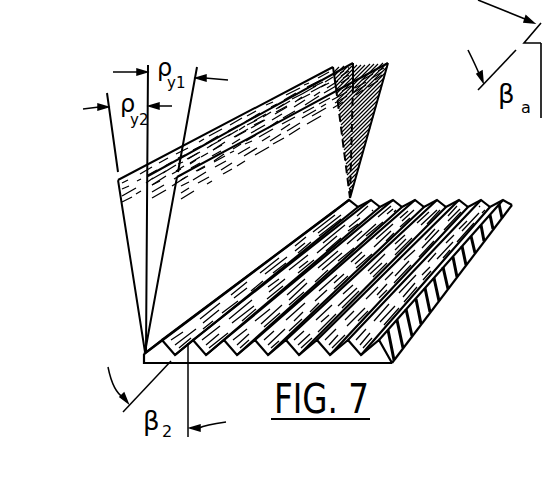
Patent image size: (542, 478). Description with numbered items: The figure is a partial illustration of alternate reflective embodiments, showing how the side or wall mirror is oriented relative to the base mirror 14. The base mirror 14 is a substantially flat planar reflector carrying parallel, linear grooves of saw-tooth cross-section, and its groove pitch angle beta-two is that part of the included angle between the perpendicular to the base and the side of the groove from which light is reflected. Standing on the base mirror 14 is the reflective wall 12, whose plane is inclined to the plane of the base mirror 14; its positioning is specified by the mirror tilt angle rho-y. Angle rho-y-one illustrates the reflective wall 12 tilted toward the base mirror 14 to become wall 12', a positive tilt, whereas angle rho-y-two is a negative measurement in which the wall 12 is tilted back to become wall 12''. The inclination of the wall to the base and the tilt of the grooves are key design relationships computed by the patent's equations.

The reflective wall 12 is at (217, 207).
The wall tilted toward the base mirror 12' is at (266, 207).
The wall tilted back 12'' is at (203, 209).
The base mirror 14 is at (379, 366).